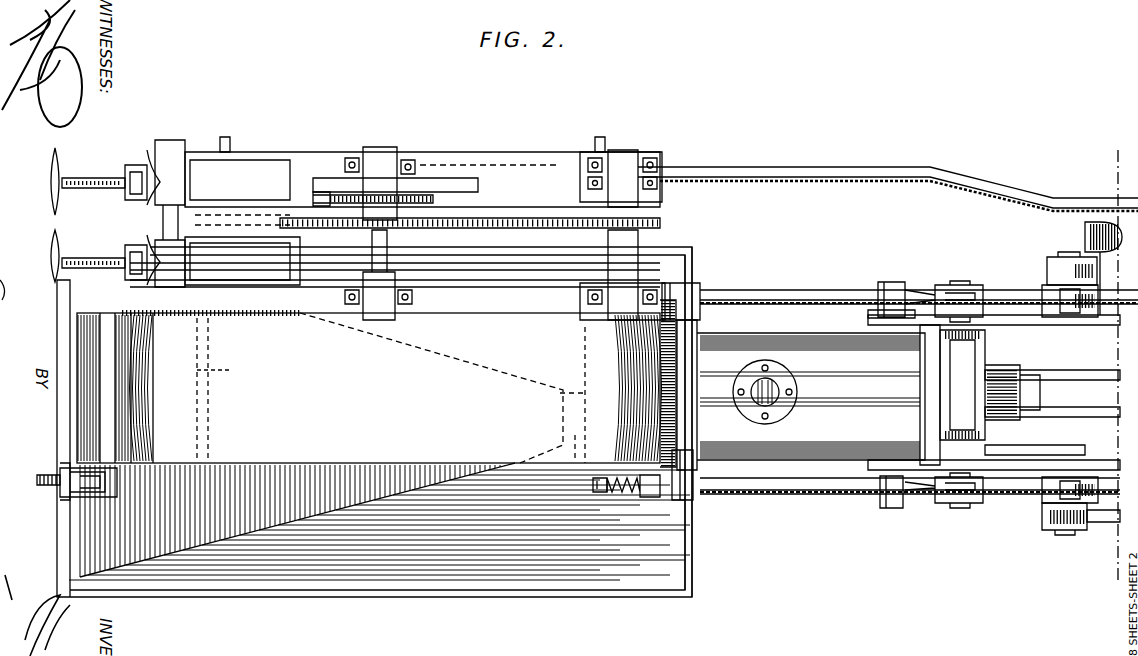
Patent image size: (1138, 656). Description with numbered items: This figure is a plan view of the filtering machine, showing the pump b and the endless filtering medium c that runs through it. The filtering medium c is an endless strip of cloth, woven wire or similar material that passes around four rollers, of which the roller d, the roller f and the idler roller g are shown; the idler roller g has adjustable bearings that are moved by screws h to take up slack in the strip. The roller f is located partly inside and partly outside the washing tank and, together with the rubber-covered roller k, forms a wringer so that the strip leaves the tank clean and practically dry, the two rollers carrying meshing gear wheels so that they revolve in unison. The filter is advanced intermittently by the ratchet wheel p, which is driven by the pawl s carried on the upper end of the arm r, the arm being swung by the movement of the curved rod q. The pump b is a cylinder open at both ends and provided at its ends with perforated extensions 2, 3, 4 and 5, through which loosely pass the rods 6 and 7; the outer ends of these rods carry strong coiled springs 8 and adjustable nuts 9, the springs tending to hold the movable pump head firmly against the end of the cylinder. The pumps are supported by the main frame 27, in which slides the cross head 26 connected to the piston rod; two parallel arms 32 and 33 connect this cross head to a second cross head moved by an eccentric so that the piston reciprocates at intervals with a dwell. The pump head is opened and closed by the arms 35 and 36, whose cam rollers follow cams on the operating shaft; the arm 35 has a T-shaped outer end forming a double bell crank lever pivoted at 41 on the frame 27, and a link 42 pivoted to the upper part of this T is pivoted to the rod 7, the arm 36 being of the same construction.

The screw h is at (94, 177).
The pawl s is at (330, 192).
The arm r is at (367, 183).
The ratchet wheel p is at (423, 192).
The rod q is at (783, 173).
The roller k is at (100, 333).
The filtering medium c is at (376, 383).
The roller d is at (585, 352).
The roller f is at (230, 370).
The roller g is at (190, 400).
The pump b is at (808, 395).
The perforated extension 2 is at (895, 285).
The perforated extension 3 is at (893, 508).
The perforated extension 4 is at (693, 502).
The perforated extension 5 is at (700, 290).
The rod 6 is at (815, 292).
The rod 7 is at (812, 492).
The coiled spring 8 is at (622, 497).
The adjustable nut 9 is at (597, 495).
The cross head 26 is at (983, 357).
The main frame 27 is at (1000, 318).
The parallel arm 32 is at (1052, 364).
The parallel arm 33 is at (1075, 418).
The arm 35 is at (1102, 522).
The arm 36 is at (1103, 270).
The pivot 41 is at (1068, 258).
The link 42 is at (990, 500).